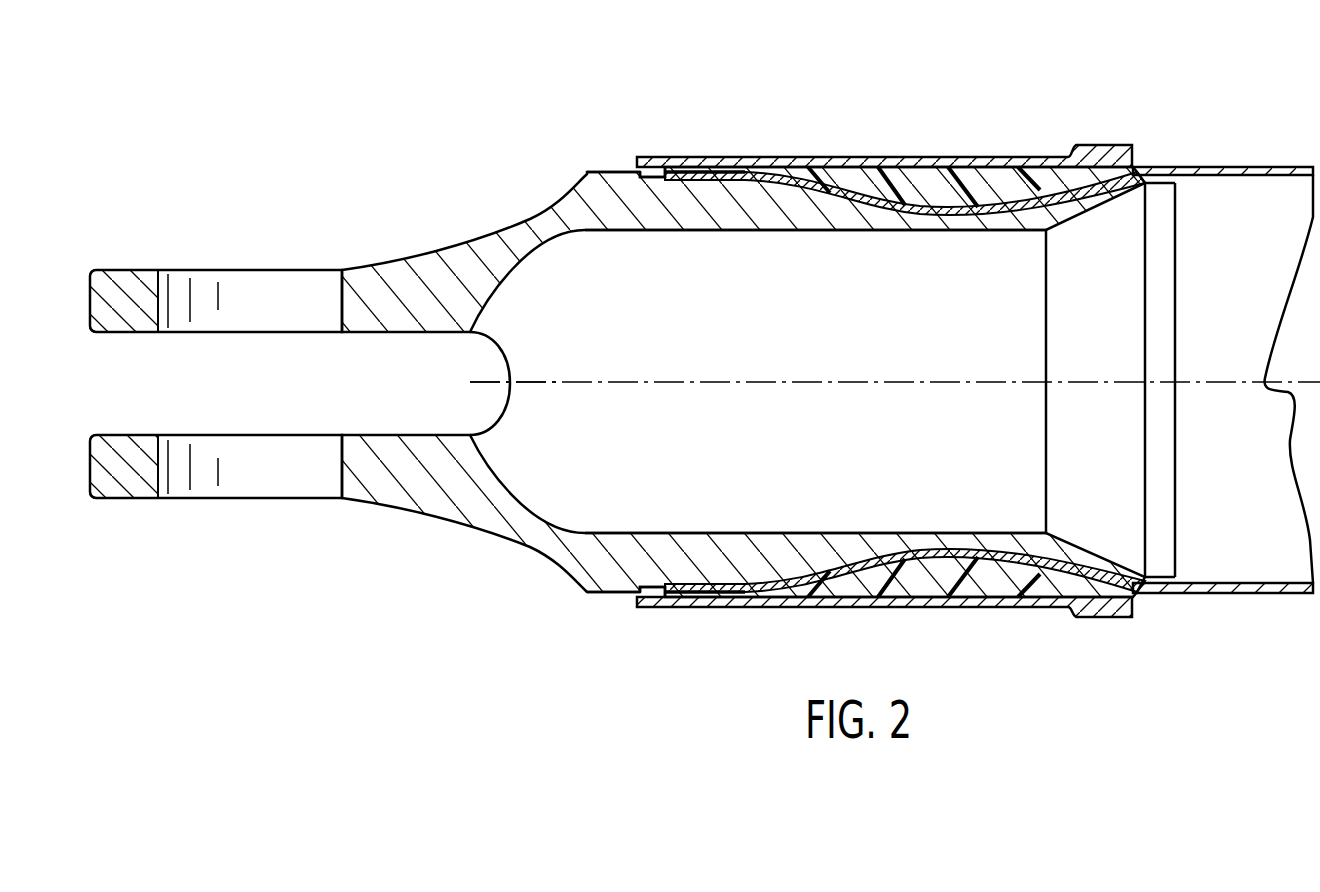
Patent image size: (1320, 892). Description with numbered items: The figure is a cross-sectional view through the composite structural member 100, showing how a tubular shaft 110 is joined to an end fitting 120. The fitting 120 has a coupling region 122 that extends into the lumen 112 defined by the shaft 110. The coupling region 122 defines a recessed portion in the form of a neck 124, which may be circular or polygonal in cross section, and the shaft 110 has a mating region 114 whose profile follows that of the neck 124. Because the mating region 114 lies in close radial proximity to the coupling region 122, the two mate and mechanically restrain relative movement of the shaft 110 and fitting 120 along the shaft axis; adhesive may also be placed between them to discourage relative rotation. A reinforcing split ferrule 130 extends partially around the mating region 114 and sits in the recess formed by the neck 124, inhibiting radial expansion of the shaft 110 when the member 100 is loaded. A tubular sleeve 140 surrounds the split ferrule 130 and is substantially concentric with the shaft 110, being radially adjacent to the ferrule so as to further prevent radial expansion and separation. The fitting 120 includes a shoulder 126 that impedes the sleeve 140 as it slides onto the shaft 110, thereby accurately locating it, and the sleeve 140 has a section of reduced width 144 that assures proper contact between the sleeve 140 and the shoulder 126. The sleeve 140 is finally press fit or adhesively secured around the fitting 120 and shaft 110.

The composite structural member 100 is at (432, 100).
The shaft 110 is at (1248, 167).
The lumen 112 is at (1258, 305).
The mating region 114 is at (905, 558).
The fitting 120 is at (383, 505).
The coupling region 122 is at (509, 530).
The neck 124 is at (879, 231).
The shoulder 126 is at (657, 171).
The split ferrule 130 is at (963, 177).
The sleeve 140 is at (862, 157).
The section of reduced width 144 is at (596, 171).